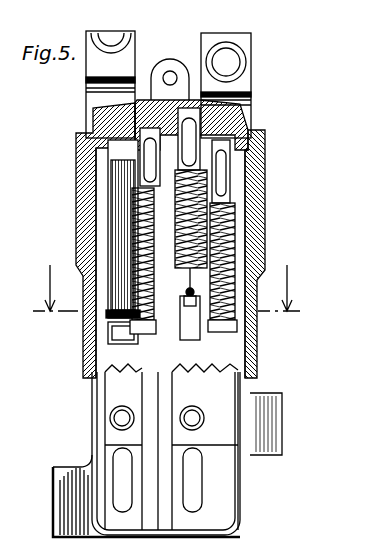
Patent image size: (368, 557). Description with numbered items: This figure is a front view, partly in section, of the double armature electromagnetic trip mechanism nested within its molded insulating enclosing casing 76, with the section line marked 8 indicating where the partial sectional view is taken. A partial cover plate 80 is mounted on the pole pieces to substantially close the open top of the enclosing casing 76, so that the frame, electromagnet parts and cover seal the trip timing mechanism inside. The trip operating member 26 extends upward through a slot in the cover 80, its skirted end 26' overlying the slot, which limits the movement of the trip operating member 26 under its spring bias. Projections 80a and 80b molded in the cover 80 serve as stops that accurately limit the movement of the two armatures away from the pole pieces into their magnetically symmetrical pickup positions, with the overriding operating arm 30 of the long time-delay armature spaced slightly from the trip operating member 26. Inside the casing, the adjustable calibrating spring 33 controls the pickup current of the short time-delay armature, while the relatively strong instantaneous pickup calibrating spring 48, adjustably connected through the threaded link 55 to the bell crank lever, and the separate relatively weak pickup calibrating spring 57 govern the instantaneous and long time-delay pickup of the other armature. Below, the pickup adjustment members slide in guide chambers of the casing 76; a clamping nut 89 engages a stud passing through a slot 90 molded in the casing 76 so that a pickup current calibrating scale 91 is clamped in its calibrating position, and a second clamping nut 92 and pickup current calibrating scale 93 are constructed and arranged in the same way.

The skirted end 26' is at (168, 84).
The partial cover plate 80 is at (236, 120).
The projection 80a is at (92, 156).
The projection 80b is at (262, 153).
The insulating enclosing casing 76 is at (262, 232).
The trip operating member 26 is at (133, 228).
The calibrating spring 33 is at (150, 340).
The overriding operating arm 30 is at (180, 222).
The instantaneous pickup calibrating spring 48 is at (232, 200).
The pickup calibrating spring 57 is at (245, 318).
The threaded link 55 is at (184, 326).
The section line 8- 8 is at (166, 280).
The pickup current calibrating scale 91 is at (104, 385).
The clamping nut 89 is at (110, 416).
The slot 90 is at (124, 485).
The pickup current calibrating scale 93 is at (200, 398).
The clamping nut 92 is at (206, 420).